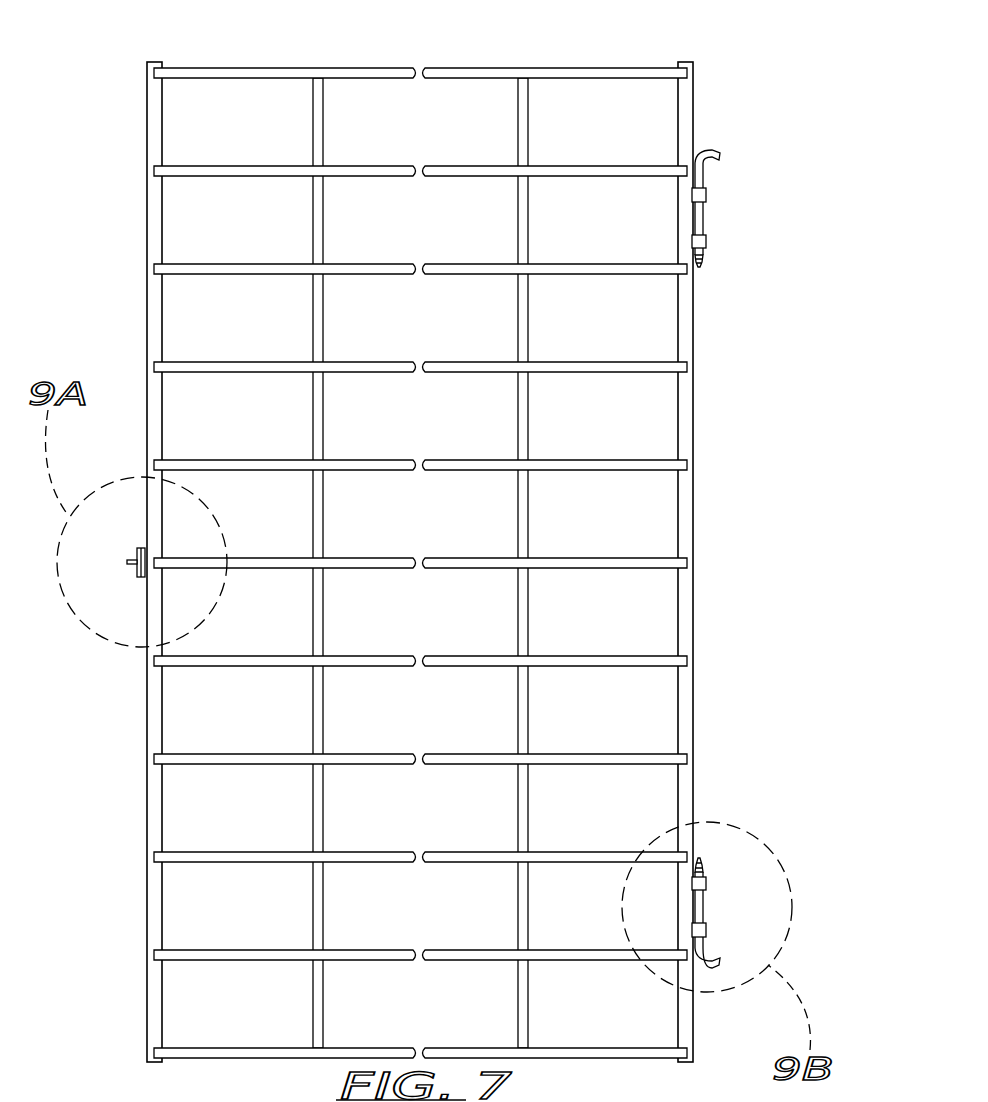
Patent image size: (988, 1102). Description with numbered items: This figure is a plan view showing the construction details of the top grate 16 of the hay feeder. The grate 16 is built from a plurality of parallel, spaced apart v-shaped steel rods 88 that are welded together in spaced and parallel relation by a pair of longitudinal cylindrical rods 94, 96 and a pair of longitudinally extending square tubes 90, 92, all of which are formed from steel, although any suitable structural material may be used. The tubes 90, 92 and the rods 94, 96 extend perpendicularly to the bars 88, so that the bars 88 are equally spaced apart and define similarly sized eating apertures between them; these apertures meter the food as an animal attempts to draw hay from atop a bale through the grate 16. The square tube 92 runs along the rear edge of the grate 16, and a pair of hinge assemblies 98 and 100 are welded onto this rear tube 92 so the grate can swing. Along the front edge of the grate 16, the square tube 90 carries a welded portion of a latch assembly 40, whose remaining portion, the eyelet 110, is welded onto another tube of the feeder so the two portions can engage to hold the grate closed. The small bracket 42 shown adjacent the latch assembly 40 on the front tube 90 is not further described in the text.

The grate 16 is at (433, 536).
The v-shaped steel rods 88 is at (243, 66).
The longitudinal extending square tube 90 is at (146, 906).
The longitudinal extending square tube 92 is at (693, 790).
The longitudinal cylindrical rod 94 is at (323, 832).
The longitudinal cylindrical rod 96 is at (518, 835).
The hinge assembly 98 is at (724, 208).
The hinge assembly 100 is at (732, 897).
The latch assembly 40 is at (87, 559).
The latch bracket 42 is at (138, 548).
The eyelet 110 is at (128, 562).